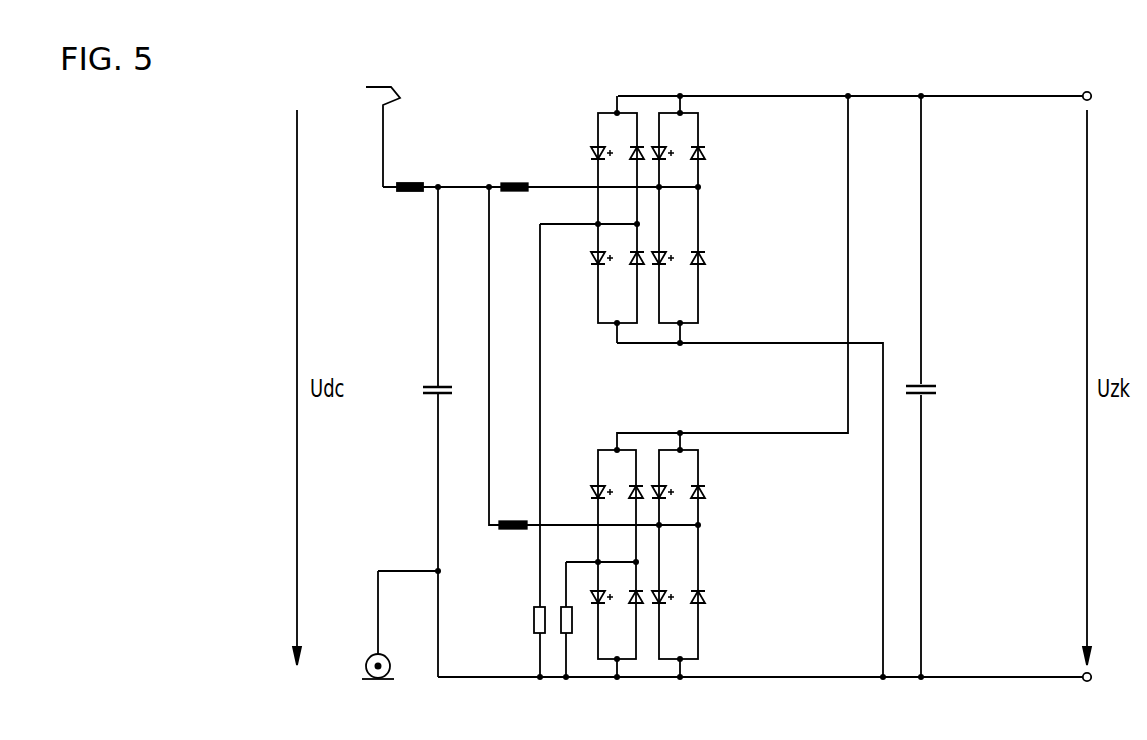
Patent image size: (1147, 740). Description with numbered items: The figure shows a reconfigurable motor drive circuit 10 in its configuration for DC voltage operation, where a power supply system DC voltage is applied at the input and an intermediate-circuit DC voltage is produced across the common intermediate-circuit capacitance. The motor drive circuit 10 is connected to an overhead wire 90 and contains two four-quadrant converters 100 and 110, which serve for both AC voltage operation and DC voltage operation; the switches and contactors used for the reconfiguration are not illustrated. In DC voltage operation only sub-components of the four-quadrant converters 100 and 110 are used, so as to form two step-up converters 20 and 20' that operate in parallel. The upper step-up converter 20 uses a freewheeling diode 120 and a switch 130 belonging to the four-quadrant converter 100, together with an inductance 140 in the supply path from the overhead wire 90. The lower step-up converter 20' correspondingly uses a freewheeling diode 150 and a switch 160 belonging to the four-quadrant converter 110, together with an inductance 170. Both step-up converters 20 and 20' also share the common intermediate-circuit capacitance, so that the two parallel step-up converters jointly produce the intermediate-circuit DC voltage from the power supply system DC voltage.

The motor drive circuit 10 is at (962, 590).
The upper step-up converter 20 is at (731, 218).
The lower step-up converter 20' is at (719, 510).
The overhead wire 90 is at (381, 84).
The four-quadrant converter 100 is at (602, 98).
The four-quadrant converter 110 is at (601, 434).
The freewheeling diode 120 is at (706, 157).
The switch 130 is at (663, 263).
The inductance 140 is at (515, 182).
The freewheeling diode 150 is at (706, 492).
The switch 160 is at (662, 591).
The inductance 170 is at (513, 530).